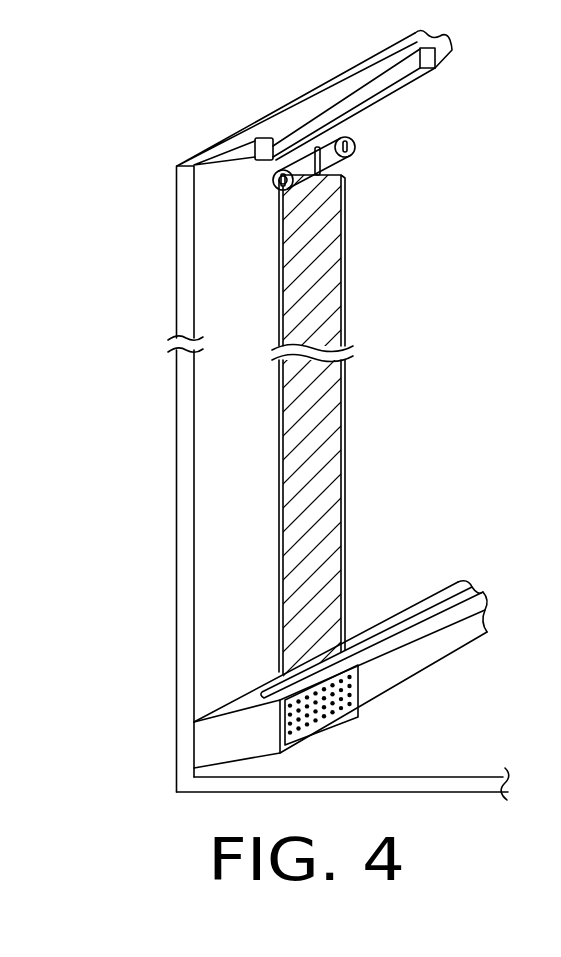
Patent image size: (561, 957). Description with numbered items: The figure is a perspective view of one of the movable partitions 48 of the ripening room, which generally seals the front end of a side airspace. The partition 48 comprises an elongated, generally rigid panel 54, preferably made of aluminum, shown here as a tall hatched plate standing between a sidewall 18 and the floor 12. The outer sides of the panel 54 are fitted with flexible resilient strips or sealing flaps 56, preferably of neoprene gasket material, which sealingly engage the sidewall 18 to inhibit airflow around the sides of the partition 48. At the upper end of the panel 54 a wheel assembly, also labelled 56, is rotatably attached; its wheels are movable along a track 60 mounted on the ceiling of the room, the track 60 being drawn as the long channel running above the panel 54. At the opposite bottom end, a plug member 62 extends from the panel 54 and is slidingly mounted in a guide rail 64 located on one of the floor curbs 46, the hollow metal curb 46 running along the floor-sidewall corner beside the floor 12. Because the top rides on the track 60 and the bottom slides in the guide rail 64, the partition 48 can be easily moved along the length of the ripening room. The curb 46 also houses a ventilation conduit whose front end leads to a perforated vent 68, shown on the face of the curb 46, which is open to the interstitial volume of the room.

The floor 12 is at (425, 781).
The sidewall 18 is at (182, 448).
The floor curb 46 is at (423, 648).
The movable partition 48 is at (359, 298).
The panel 54 is at (328, 411).
The sealing flap 56 is at (340, 158).
The track 60 is at (391, 95).
The plug member 62 is at (284, 675).
The guide rail 64 is at (416, 610).
The perforated vent 68 is at (318, 723).